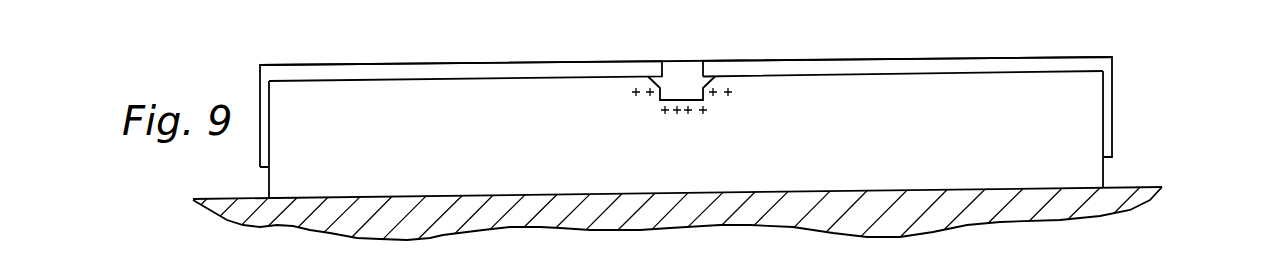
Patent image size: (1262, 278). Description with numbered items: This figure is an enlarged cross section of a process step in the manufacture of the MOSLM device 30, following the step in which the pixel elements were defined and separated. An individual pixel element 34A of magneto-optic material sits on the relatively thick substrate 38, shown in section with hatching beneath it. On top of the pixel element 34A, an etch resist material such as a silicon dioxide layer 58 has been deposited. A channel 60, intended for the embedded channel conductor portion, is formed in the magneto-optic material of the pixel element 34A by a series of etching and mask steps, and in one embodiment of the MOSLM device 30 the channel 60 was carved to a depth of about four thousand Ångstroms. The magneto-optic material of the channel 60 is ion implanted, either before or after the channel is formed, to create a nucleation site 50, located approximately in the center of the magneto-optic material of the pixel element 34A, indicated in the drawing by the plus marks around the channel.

The MOSLM device 30 is at (1133, 50).
The silicon dioxide layer 58 is at (473, 70).
The channel 60 is at (678, 100).
The nucleation site 50 is at (682, 120).
The pixel element 34A is at (847, 144).
The substrate 38 is at (985, 215).